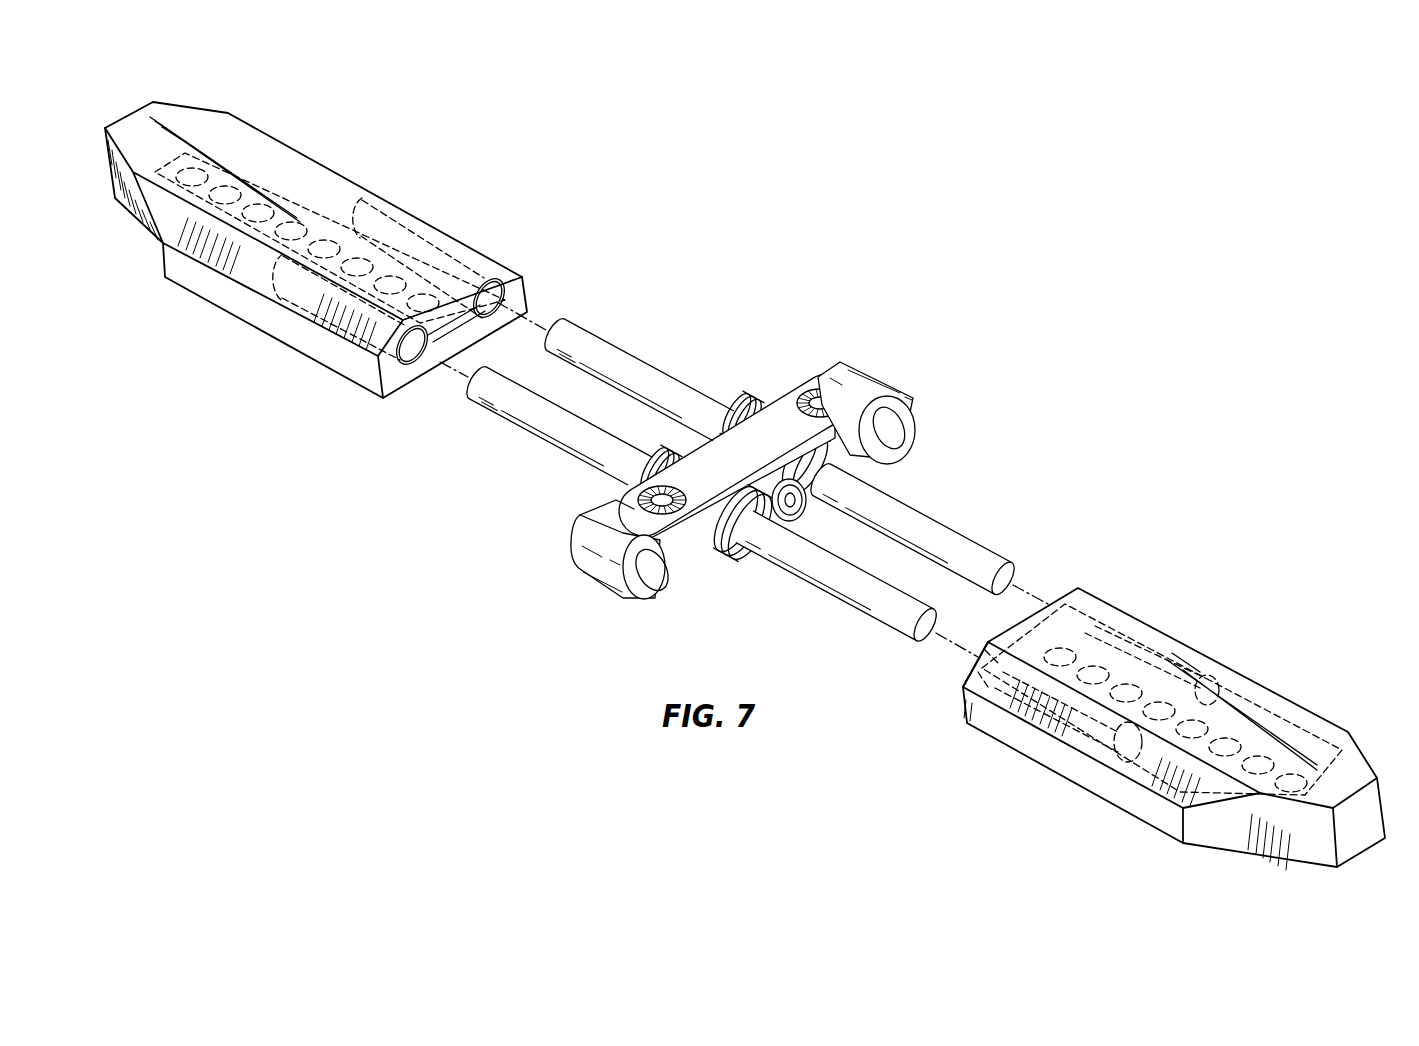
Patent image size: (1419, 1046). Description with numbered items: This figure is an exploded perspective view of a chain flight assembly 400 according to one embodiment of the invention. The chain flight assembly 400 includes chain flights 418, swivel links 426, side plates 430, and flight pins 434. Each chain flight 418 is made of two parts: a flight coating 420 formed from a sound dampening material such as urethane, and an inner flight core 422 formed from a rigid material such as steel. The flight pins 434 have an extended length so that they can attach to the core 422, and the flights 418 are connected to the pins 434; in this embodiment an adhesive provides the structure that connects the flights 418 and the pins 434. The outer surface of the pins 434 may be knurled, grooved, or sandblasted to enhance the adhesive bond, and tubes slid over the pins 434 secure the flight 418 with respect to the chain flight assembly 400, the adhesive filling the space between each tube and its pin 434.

The chain flight assembly 400 is at (1022, 152).
The chain flight 418 is at (426, 168).
The flight coating 420 is at (267, 143).
The inner flight core 422 is at (309, 300).
The swivel link 426 is at (706, 439).
The side plate 430 is at (728, 528).
The flight pin 434 is at (824, 567).